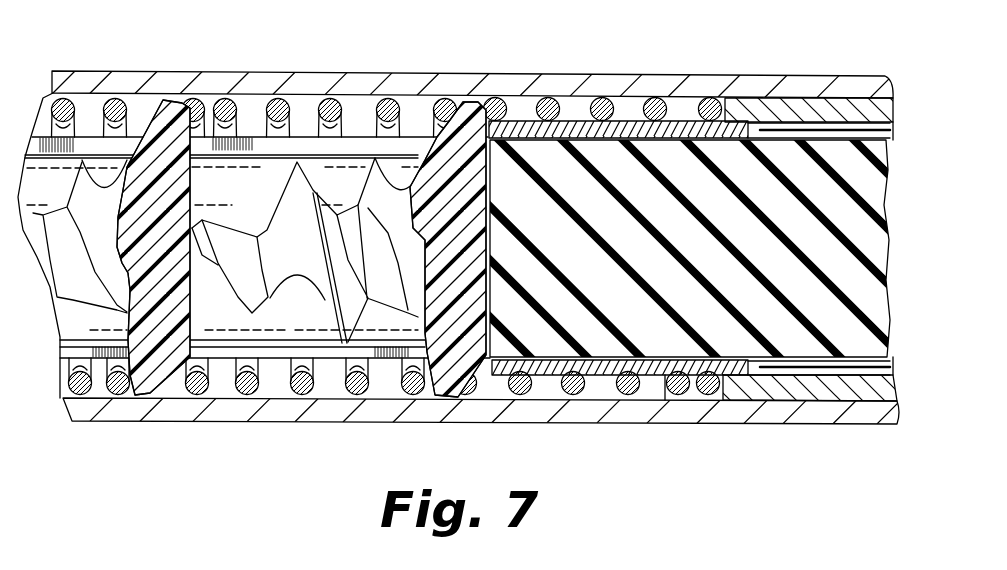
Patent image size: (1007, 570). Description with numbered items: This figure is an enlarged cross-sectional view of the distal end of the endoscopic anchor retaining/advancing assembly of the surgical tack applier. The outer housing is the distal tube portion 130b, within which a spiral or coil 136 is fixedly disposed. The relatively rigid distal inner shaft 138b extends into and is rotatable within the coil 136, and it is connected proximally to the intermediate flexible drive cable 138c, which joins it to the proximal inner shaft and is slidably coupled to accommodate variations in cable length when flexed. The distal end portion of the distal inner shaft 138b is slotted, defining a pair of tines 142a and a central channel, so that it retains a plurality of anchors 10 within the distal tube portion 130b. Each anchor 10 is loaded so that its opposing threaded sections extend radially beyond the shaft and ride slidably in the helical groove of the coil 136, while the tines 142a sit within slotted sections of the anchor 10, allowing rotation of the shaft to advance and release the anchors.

The anchor 10 is at (291, 248).
The distal tube portion 130b is at (578, 68).
The coil 136 is at (440, 103).
The distal inner shaft 138b is at (251, 122).
The intermediate flexible drive cable 138c is at (772, 207).
The tines 142a is at (352, 147).